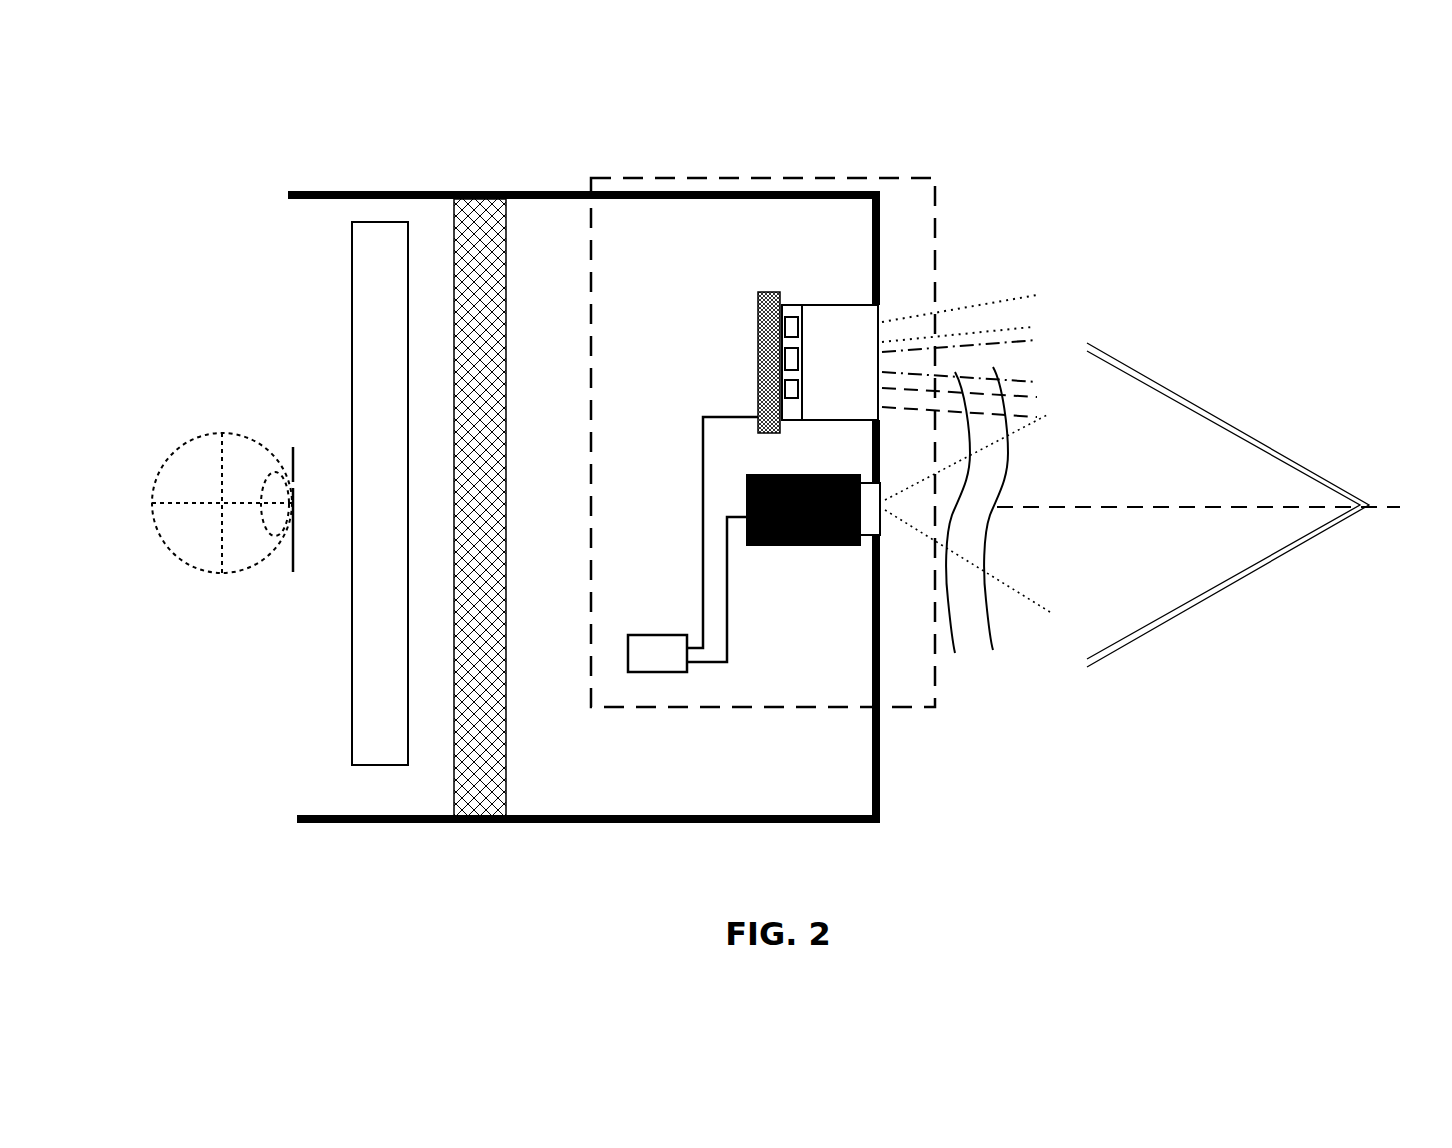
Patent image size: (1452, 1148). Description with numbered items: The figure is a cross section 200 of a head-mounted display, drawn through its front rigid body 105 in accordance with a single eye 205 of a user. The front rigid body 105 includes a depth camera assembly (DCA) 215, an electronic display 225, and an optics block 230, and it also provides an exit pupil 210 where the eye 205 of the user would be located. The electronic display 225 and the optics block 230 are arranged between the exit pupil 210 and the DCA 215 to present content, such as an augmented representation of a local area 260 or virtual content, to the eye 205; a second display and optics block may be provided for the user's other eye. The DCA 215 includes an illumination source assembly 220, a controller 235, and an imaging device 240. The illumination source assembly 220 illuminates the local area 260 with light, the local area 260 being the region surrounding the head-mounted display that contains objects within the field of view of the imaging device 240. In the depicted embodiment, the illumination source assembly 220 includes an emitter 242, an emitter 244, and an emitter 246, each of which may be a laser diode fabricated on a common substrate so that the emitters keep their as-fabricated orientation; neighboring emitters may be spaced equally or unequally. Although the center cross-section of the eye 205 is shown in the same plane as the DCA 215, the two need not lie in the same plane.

The cross section 200 is at (200, 68).
The front rigid body 105 is at (880, 657).
The eye 205 is at (183, 563).
The exit pupil 210 is at (293, 447).
The depth camera assembly (DCA) 215 is at (935, 683).
The illumination source assembly 220 is at (798, 304).
The electronic display 225 is at (453, 248).
The optics block 230 is at (397, 770).
The controller 235 is at (652, 672).
The imaging device 240 is at (787, 547).
The emitter 242 is at (778, 365).
The emitter 244 is at (780, 383).
The emitter 246 is at (762, 292).
The local area 260 is at (1207, 600).